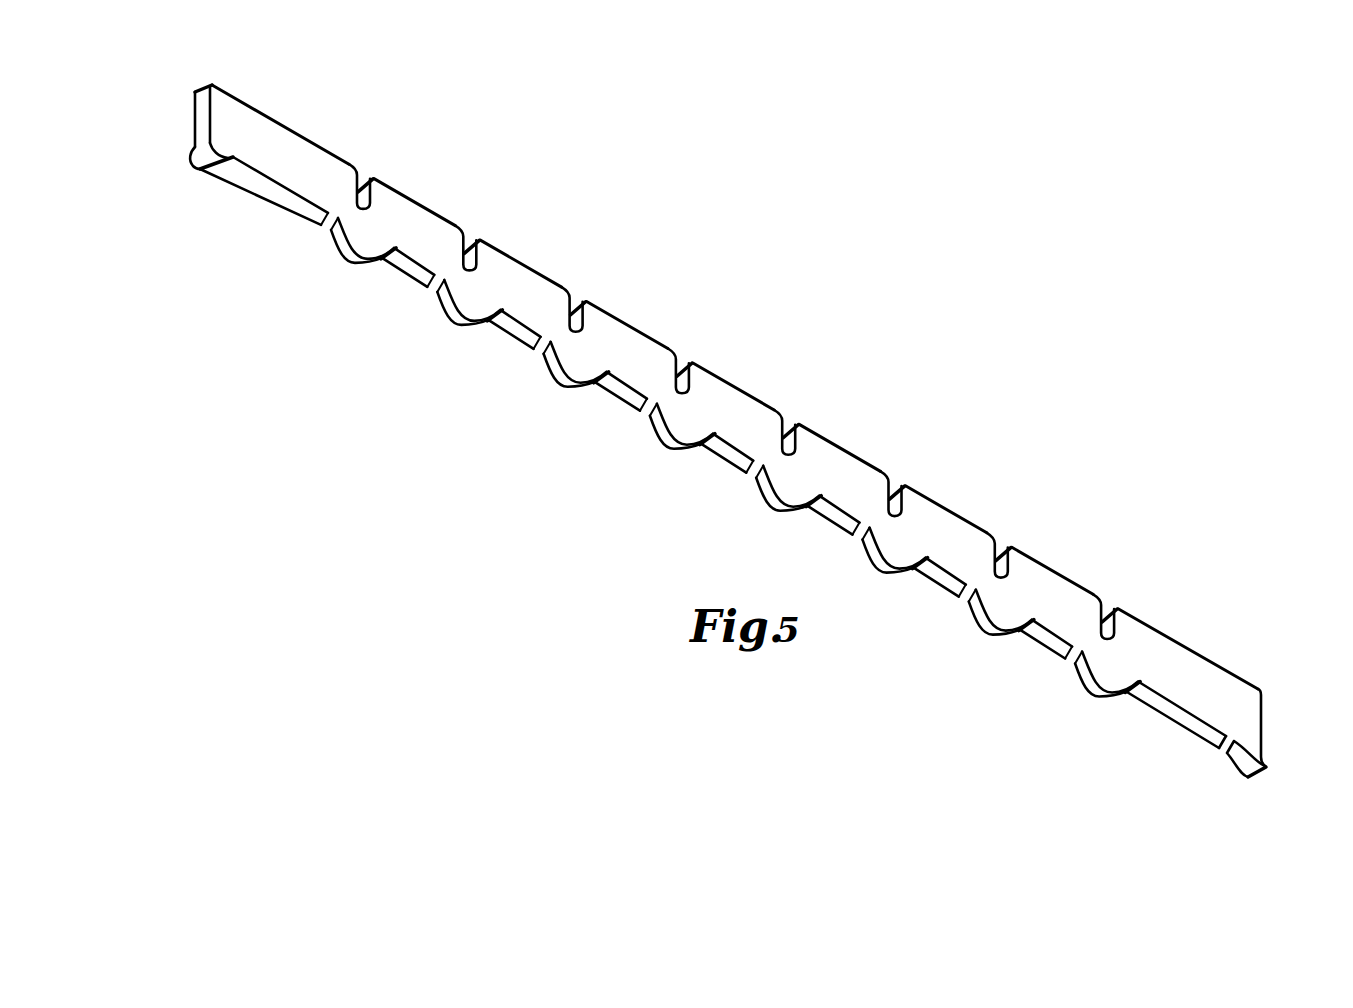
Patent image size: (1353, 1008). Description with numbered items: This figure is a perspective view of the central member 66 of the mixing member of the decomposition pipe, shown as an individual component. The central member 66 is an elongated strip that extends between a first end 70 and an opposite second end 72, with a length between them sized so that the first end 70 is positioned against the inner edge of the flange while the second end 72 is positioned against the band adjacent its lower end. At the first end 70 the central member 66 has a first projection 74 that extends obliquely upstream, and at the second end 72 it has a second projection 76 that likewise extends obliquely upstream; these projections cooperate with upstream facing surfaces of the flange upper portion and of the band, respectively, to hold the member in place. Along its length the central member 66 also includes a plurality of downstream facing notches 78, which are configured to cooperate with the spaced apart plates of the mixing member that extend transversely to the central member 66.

The central member 66 is at (734, 464).
The first end 70 is at (205, 84).
The second end 72 is at (1264, 713).
The first projection 74 is at (193, 170).
The second projection 76 is at (1263, 786).
The downstream facing notches 78 is at (357, 167).